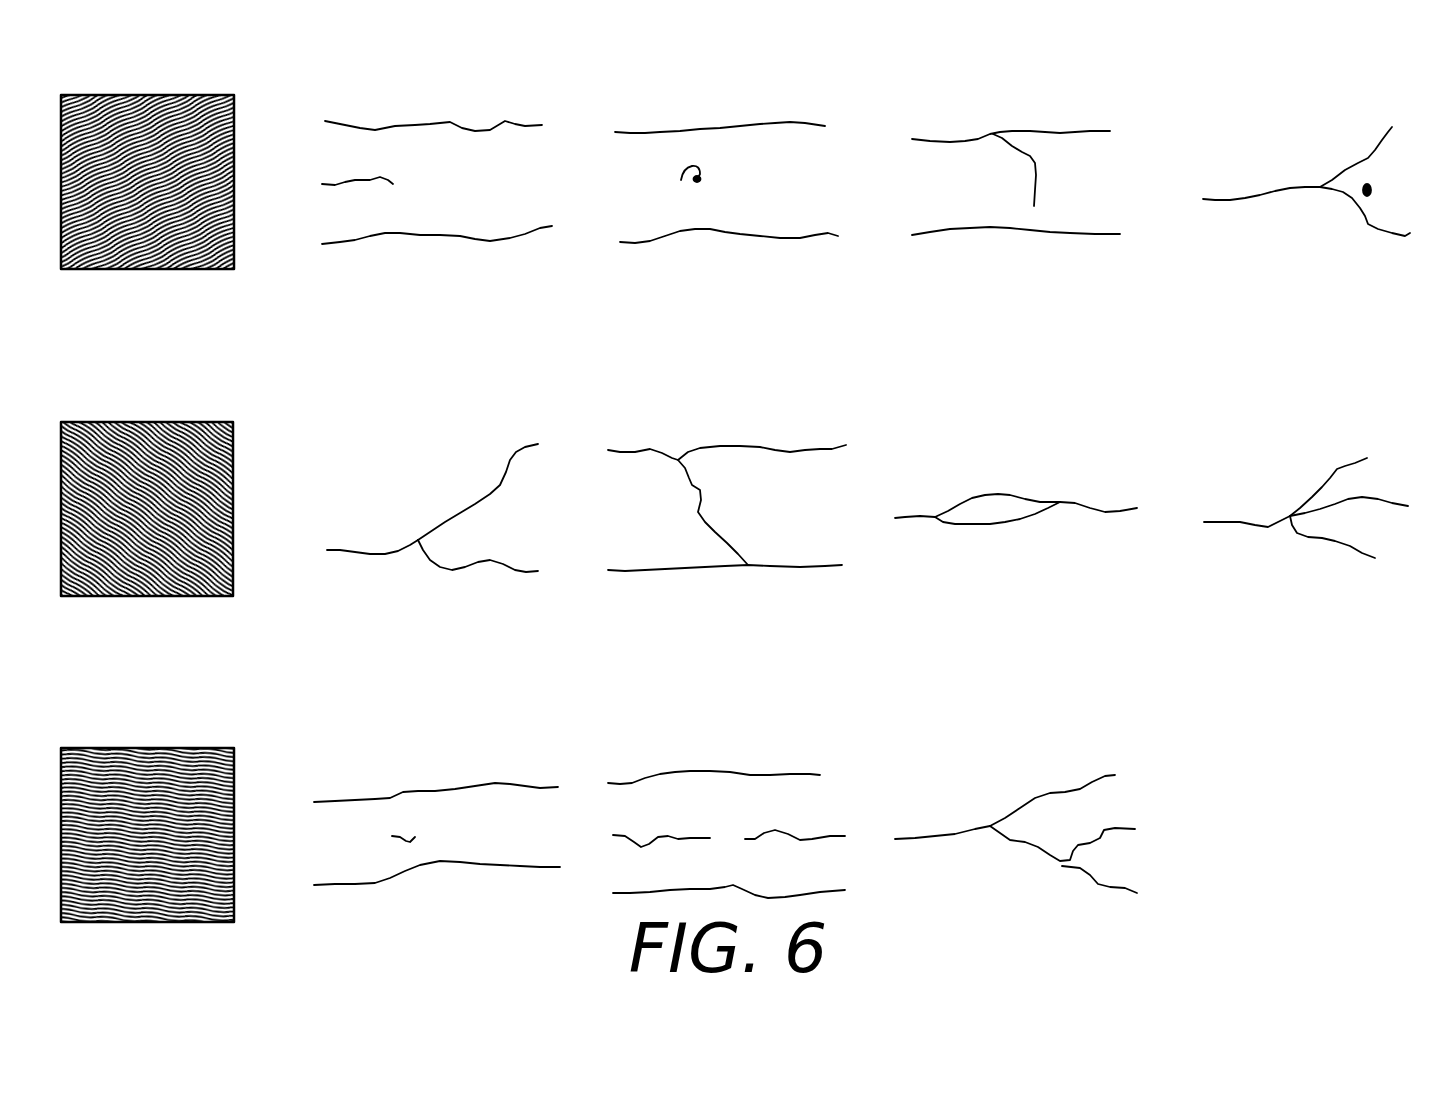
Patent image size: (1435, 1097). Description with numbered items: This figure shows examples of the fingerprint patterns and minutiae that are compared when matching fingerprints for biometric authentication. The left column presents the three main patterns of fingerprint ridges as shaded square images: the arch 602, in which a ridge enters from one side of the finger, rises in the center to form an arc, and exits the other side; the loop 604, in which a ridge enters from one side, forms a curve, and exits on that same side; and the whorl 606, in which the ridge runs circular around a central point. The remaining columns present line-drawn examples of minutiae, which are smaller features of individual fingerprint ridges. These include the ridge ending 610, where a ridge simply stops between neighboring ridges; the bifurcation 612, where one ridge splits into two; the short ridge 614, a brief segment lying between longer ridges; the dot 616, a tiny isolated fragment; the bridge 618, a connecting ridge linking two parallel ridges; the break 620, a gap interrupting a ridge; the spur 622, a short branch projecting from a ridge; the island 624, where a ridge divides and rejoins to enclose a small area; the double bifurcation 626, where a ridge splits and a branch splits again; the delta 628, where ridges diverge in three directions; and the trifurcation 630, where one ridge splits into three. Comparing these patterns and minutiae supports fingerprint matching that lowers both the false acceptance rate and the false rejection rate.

The arch 602 is at (147, 163).
The loop 604 is at (147, 489).
The whorl 606 is at (147, 815).
The ridge ending 610 is at (437, 150).
The bifurcation 612 is at (432, 477).
The short ridge 614 is at (437, 797).
The dot 616 is at (726, 150).
The bridge 618 is at (727, 477).
The break 620 is at (726, 803).
The spur 622 is at (1016, 146).
The island 624 is at (1016, 453).
The double bifurcation 626 is at (1016, 801).
The delta 628 is at (1306, 146).
The trifurcation 630 is at (1306, 470).